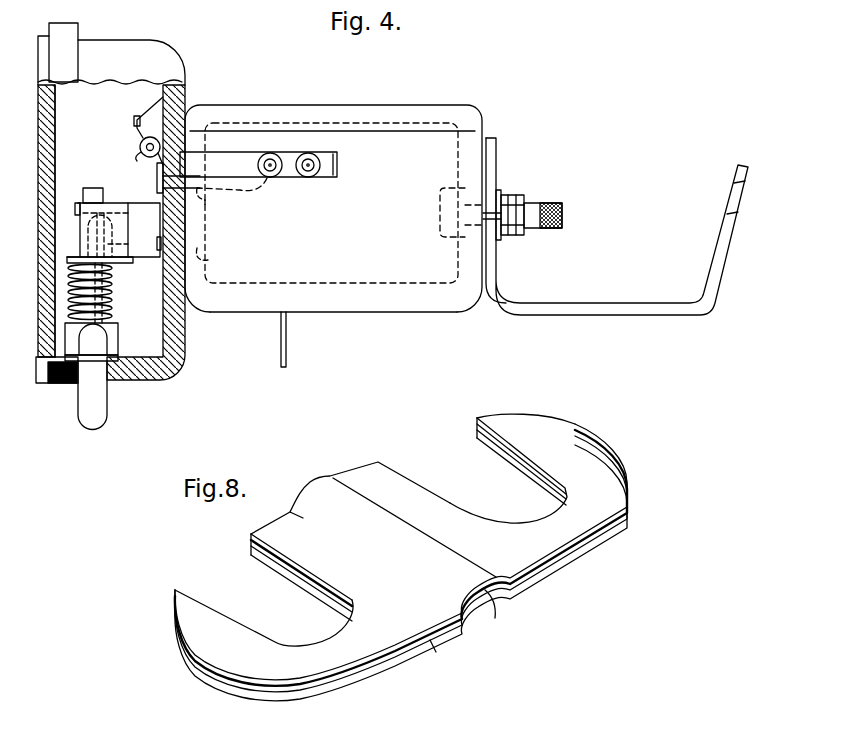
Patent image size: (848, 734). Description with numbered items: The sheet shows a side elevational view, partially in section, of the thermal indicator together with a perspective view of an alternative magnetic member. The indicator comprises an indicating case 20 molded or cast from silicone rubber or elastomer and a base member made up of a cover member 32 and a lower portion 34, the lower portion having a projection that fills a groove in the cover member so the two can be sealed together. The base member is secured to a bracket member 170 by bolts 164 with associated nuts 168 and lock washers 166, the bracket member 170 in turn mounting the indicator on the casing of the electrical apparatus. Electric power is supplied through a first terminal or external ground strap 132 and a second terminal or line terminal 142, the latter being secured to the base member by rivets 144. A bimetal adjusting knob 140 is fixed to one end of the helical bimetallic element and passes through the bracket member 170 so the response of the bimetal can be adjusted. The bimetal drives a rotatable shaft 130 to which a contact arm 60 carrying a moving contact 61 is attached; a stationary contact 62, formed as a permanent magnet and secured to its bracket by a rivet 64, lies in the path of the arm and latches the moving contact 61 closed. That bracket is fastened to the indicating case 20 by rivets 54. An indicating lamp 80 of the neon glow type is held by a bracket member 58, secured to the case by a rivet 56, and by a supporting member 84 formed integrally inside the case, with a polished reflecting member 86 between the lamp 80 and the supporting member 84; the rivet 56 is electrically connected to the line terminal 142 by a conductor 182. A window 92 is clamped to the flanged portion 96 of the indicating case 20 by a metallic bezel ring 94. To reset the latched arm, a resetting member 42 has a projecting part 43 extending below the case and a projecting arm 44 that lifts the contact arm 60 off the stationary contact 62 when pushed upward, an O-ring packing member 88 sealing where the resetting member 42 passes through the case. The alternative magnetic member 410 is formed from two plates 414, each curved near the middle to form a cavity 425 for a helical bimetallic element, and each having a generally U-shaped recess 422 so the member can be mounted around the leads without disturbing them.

In FIG. 4, the indicating case 20 is at (147, 40).
In FIG. 4, the cover member 32 is at (452, 110).
In FIG. 4, the lower portion 34 is at (426, 306).
In FIG. 4, the resetting member 42 is at (115, 333).
In FIG. 4, the projecting part 43 is at (93, 411).
In FIG. 4, the projecting arm 44 is at (110, 280).
In FIG. 4, the rivets 54 is at (208, 259).
In FIG. 4, the rivet 56 is at (206, 201).
In FIG. 4, the bracket member 58 is at (157, 169).
In FIG. 4, the contact arm 60 is at (85, 189).
In FIG. 4, the moving contact 61 is at (115, 203).
In FIG. 4, the stationary contact 62 is at (120, 228).
In FIG. 4, the rivet 64 is at (157, 245).
In FIG. 4, the indicating lamp 80 is at (139, 147).
In FIG. 4, the supporting member 84 is at (152, 107).
In FIG. 4, the reflecting member 86 is at (133, 122).
In FIG. 4, the O-ring packing member 88 is at (113, 357).
In FIG. 4, the window 92 is at (40, 331).
In FIG. 4, the bezel ring 94 is at (68, 30).
In FIG. 4, the flanged portion 96 is at (64, 385).
In FIG. 4, the rotatable shaft 130 is at (142, 205).
In FIG. 4, the external ground strap 132 is at (287, 363).
In FIG. 4, the bimetal adjusting knob 140 is at (563, 216).
In FIG. 4, the line terminal 142 is at (338, 166).
In FIG. 4, the rivets 144 is at (305, 178).
In FIG. 4, the bolts 164 is at (441, 237).
In FIG. 4, the lock washers 166 is at (500, 192).
In FIG. 4, the nuts 168 is at (508, 197).
In FIG. 4, the bracket member 170 is at (632, 312).
In FIG. 4, the conductor 182 is at (245, 193).
In FIG. 8, the magnetic member 410 is at (648, 568).
In FIG. 8, the plates 414 is at (438, 650).
In FIG. 8, the U-shaped recess 422 is at (316, 643).
In FIG. 8, the cavity 425 is at (492, 612).